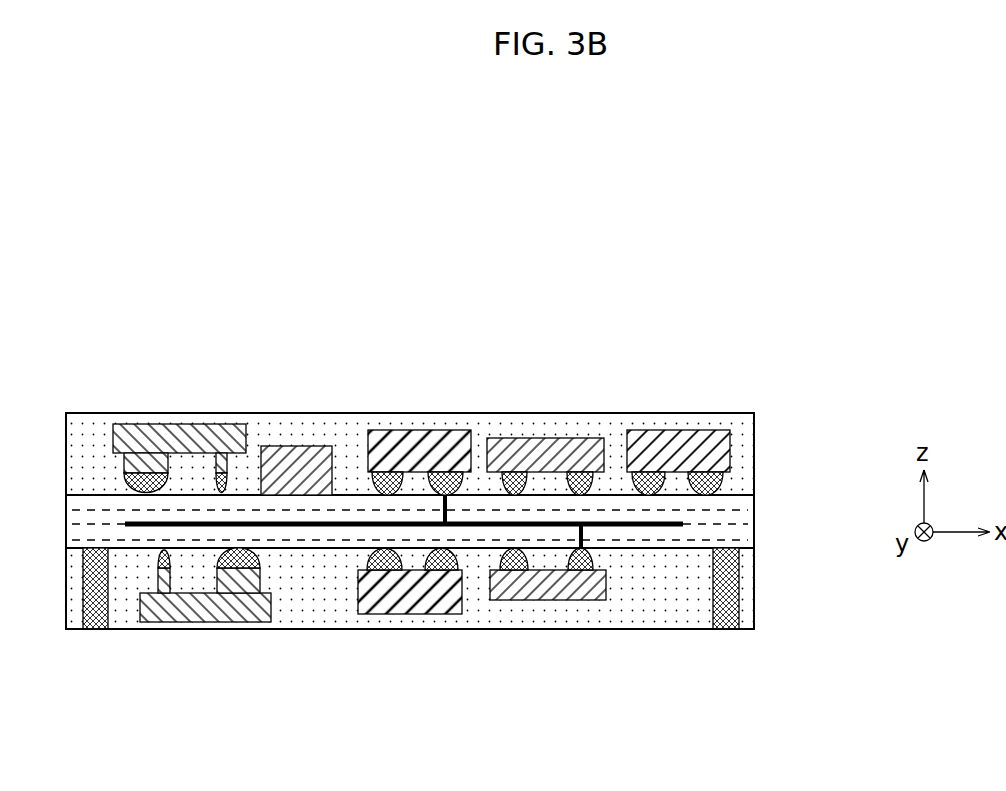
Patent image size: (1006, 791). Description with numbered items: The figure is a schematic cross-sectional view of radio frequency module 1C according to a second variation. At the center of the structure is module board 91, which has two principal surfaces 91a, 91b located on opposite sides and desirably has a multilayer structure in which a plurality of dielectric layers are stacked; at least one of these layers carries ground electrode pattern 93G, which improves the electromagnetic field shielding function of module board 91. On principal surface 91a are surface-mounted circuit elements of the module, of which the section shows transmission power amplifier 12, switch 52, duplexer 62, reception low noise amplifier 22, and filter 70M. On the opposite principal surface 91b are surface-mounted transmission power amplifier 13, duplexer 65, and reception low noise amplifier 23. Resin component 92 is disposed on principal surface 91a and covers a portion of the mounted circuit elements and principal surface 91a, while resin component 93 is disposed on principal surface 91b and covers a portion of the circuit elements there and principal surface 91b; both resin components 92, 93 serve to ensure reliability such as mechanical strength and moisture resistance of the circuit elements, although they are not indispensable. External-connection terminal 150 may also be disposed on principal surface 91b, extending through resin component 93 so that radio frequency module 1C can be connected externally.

The radio frequency module 1C is at (787, 385).
The transmission power amplifier 12 is at (212, 426).
The transmission power amplifier 13 is at (220, 616).
The reception low noise amplifier 22 is at (547, 441).
The reception low noise amplifier 23 is at (548, 595).
The switch 52 is at (290, 448).
The duplexer 62 is at (419, 433).
The duplexer 65 is at (420, 600).
The filter 70M is at (678, 434).
The module board 91 is at (750, 530).
The principal surface 91a is at (742, 492).
The principal surface 91b is at (745, 553).
The resin component 92 is at (748, 437).
The resin component 93 is at (748, 590).
The ground electrode pattern 93G is at (312, 527).
The external-connection terminal 150 is at (97, 632).